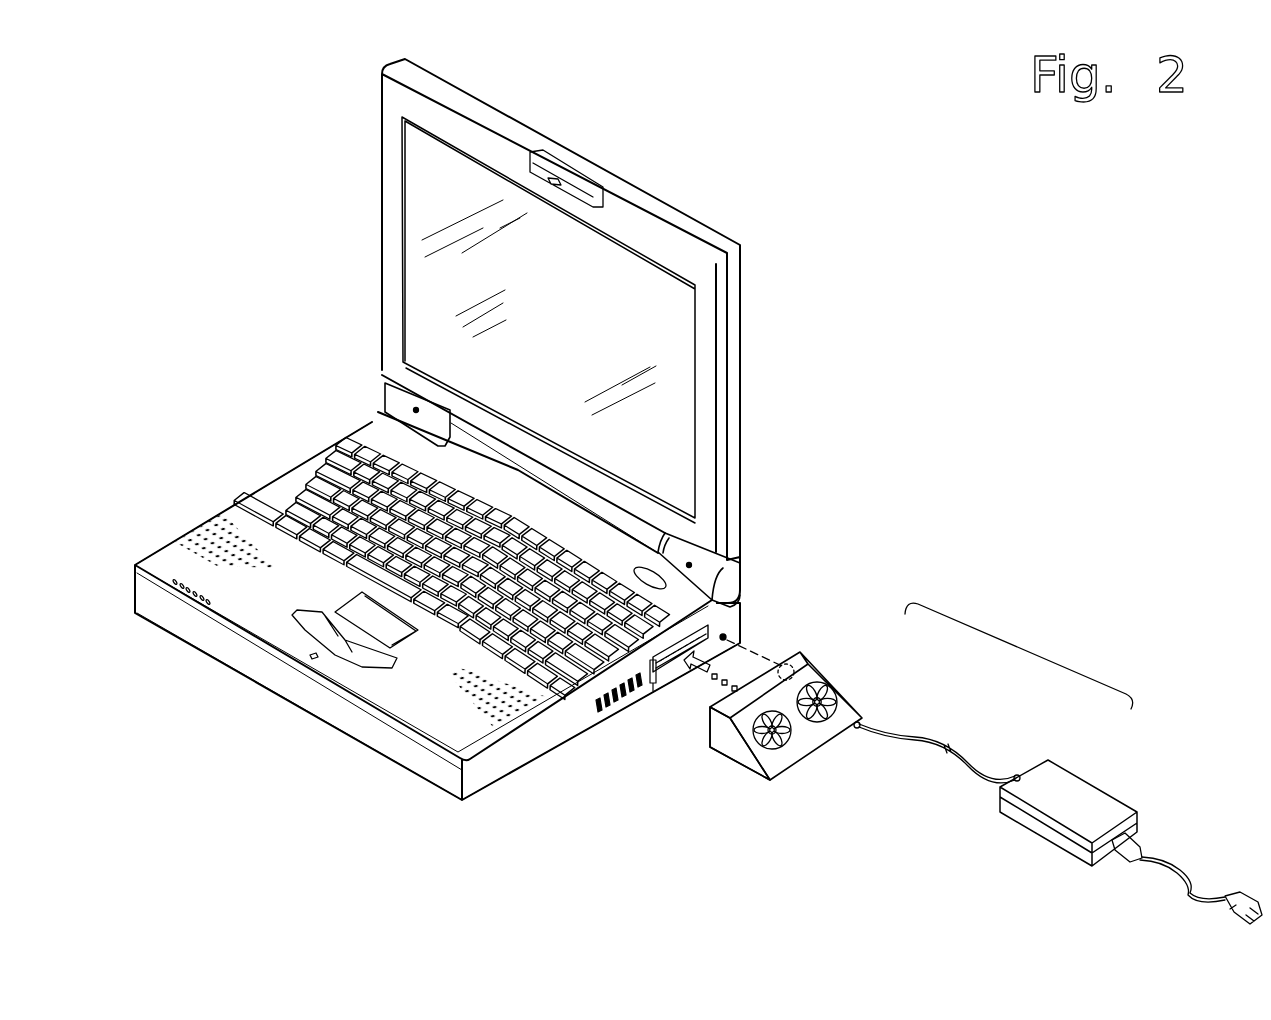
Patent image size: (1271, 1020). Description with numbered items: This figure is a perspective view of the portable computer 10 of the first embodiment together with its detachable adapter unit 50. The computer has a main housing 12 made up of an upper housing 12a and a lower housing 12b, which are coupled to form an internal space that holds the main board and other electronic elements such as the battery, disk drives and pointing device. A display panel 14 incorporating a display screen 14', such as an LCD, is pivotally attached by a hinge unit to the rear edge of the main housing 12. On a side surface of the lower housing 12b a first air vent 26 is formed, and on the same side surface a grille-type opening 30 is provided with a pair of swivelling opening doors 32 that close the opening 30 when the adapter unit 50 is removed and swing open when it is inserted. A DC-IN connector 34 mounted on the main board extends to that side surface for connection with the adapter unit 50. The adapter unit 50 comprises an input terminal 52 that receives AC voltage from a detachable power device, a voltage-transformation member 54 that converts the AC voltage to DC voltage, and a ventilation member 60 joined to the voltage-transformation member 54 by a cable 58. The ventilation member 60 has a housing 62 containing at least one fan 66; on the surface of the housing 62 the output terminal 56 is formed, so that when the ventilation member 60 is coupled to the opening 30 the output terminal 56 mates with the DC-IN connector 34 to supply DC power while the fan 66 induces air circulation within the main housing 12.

The portable computer 10 is at (930, 314).
The main housing 12 is at (290, 455).
The upper housing 12a is at (173, 555).
The lower housing 12b is at (378, 737).
The display panel 14 is at (524, 333).
The display screen 14' is at (502, 320).
The first air vent 26 is at (605, 705).
The opening 30 is at (690, 676).
The opening door 32 is at (650, 690).
The DC-IN connector 34 is at (728, 635).
The adapter unit 50 is at (1019, 654).
The input terminal 52 is at (1175, 857).
The voltage-transformation member 54 is at (1090, 790).
The output terminal 56 is at (787, 665).
The cable 58 is at (995, 765).
The ventilation member 60 is at (846, 674).
The housing 62 is at (730, 748).
The fan 66 is at (822, 708).